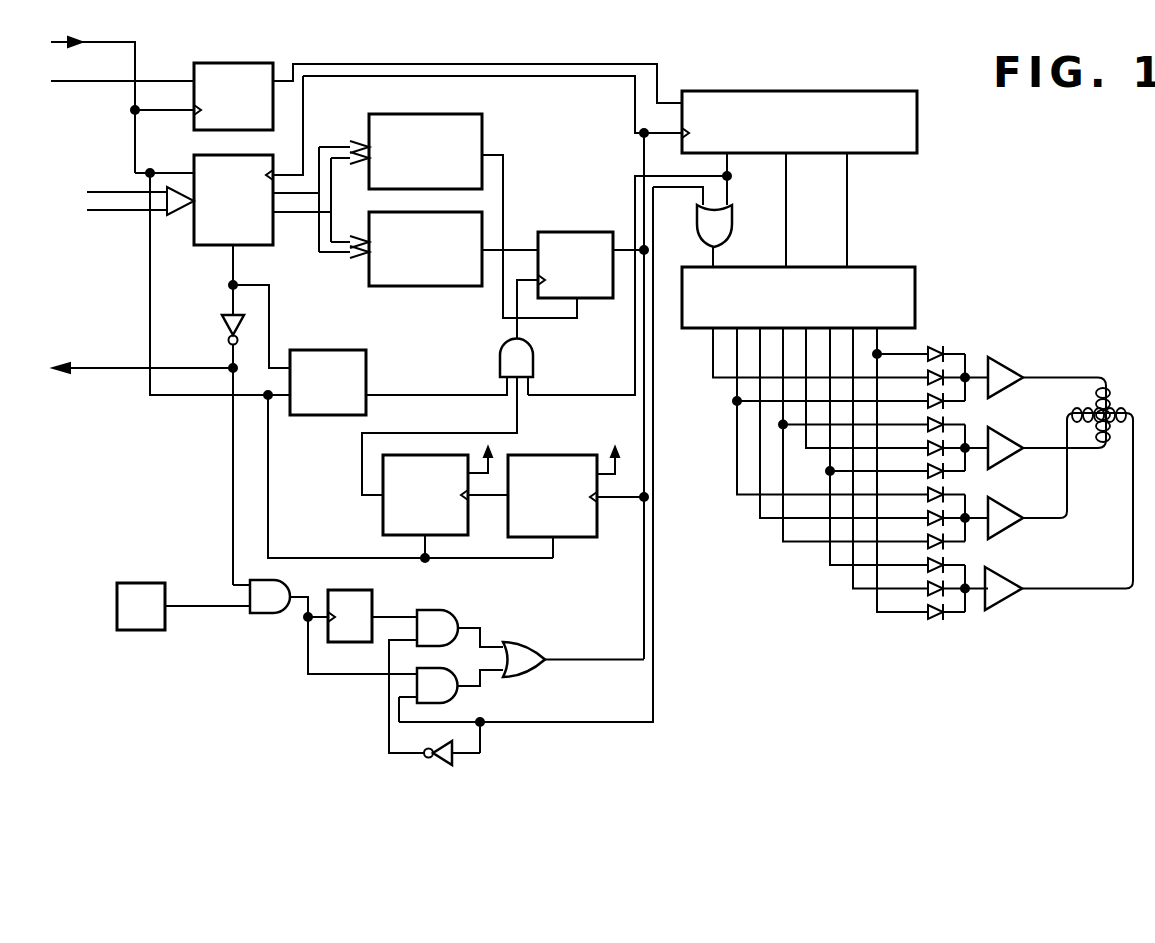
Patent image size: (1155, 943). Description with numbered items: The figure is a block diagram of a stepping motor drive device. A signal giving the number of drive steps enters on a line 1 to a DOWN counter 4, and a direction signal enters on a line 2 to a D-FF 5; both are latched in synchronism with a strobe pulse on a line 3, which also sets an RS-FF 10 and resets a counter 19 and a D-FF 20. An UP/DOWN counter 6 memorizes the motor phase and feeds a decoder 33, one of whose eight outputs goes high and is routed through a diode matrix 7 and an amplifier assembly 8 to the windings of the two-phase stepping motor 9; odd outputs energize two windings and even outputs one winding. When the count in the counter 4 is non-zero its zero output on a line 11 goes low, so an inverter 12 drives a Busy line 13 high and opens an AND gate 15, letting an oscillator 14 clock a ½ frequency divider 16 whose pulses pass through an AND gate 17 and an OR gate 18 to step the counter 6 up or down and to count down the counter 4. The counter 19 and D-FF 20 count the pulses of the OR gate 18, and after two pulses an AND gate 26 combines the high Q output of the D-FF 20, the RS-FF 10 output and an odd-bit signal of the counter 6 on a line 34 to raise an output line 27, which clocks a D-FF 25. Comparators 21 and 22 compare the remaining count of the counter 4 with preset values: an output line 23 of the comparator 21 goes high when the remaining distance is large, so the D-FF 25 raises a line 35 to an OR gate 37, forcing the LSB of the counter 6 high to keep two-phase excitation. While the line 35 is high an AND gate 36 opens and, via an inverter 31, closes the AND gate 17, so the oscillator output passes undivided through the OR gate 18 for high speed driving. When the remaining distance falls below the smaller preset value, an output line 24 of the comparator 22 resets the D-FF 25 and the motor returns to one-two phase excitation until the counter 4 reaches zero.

The line 1 is at (112, 210).
The line 2 is at (178, 81).
The line 3 is at (135, 42).
The DOWN counter 4 is at (273, 156).
The D-FF 5 is at (273, 63).
The UP/DOWN counter 6 is at (917, 107).
The diode matrix 7 is at (935, 347).
The amplifier assembly 8 is at (1023, 373).
The stepping motor 9 is at (1113, 385).
The RS-FF 10 is at (297, 415).
The line 11 is at (269, 300).
The inverter 12 is at (222, 318).
The Busy line 13 is at (177, 368).
The oscillator 14 is at (155, 583).
The AND gate 15 is at (257, 613).
The ½ frequency divider 16 is at (372, 595).
The AND gate 17 is at (452, 612).
The OR gate 18 is at (525, 644).
The counter 19 is at (573, 455).
The D-FF 20 is at (383, 527).
The comparator 21 is at (378, 287).
The comparator 22 is at (482, 120).
The output line 23 is at (525, 250).
The output line 24 is at (503, 165).
The D-FF 25 is at (607, 232).
The AND gate 26 is at (500, 350).
The output line 27 is at (517, 328).
The inverter 31 is at (455, 762).
The decoder 33 is at (897, 267).
The line 34 is at (635, 340).
The line 35 is at (653, 587).
The AND gate 36 is at (458, 698).
The OR gate 37 is at (697, 230).